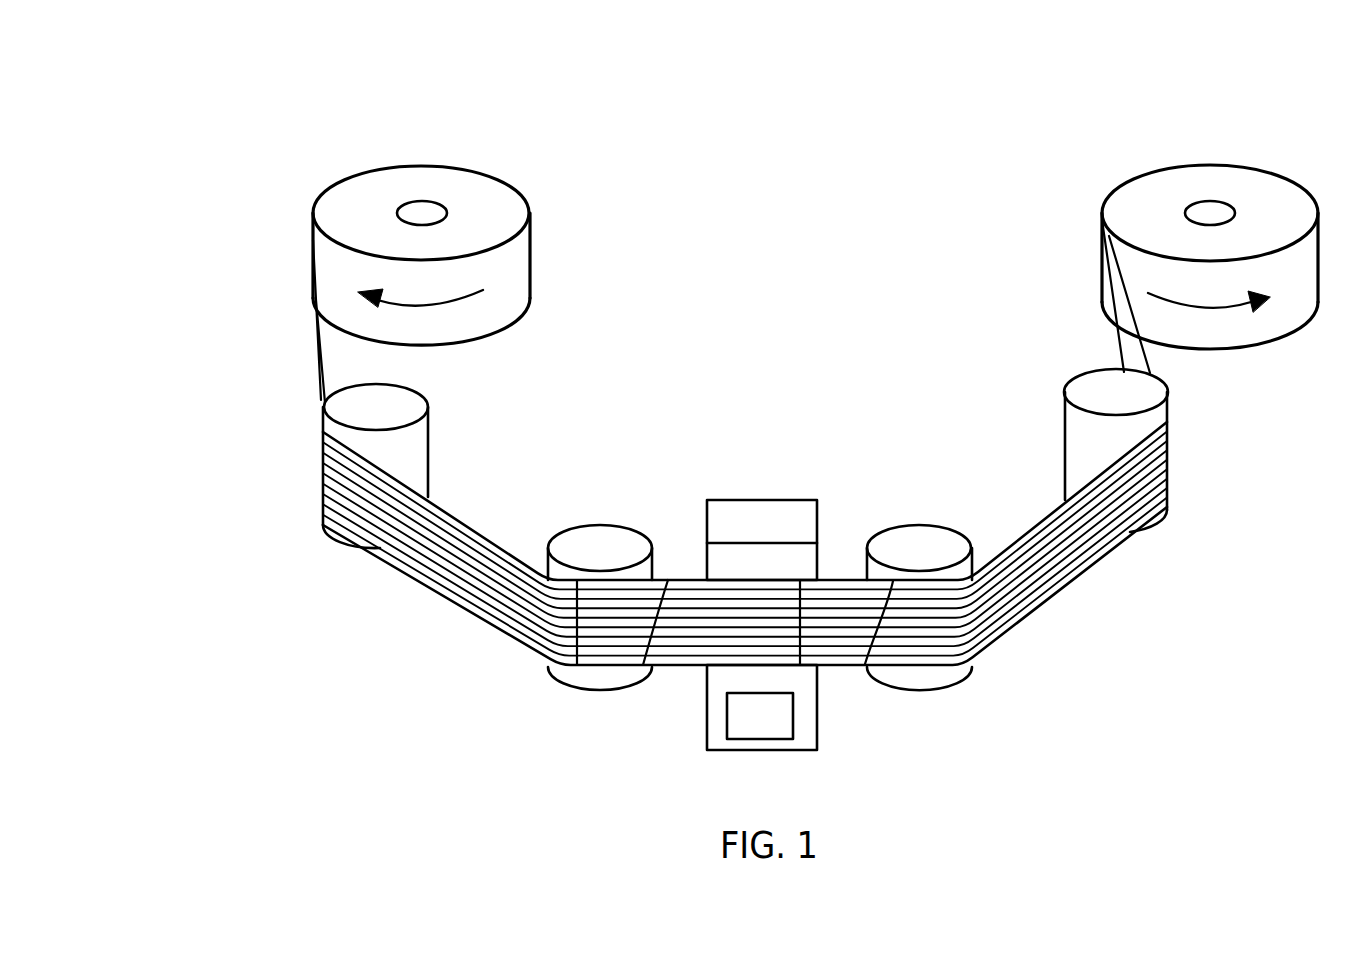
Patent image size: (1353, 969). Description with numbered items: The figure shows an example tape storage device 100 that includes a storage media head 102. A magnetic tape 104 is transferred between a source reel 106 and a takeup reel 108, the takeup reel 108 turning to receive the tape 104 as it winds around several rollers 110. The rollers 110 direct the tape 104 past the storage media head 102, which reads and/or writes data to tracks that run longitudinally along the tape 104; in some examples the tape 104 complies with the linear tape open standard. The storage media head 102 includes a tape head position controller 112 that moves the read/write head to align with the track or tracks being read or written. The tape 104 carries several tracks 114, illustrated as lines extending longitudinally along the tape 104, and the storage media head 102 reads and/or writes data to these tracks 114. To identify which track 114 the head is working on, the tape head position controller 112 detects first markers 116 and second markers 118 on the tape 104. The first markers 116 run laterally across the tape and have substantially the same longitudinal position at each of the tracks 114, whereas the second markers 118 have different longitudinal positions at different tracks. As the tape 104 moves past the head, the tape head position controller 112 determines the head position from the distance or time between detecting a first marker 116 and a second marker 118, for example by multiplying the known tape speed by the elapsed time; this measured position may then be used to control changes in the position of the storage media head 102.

The tape storage device 100 is at (226, 99).
The storage media head 102 is at (733, 500).
The magnetic tape 104 is at (740, 442).
The source reel 106 is at (1143, 176).
The takeup reel 108 is at (526, 199).
The rollers 110 is at (428, 405).
The tape head position controller 112 is at (780, 727).
The tracks 114 is at (427, 500).
The first markers 116 is at (575, 650).
The second markers 118 is at (668, 580).